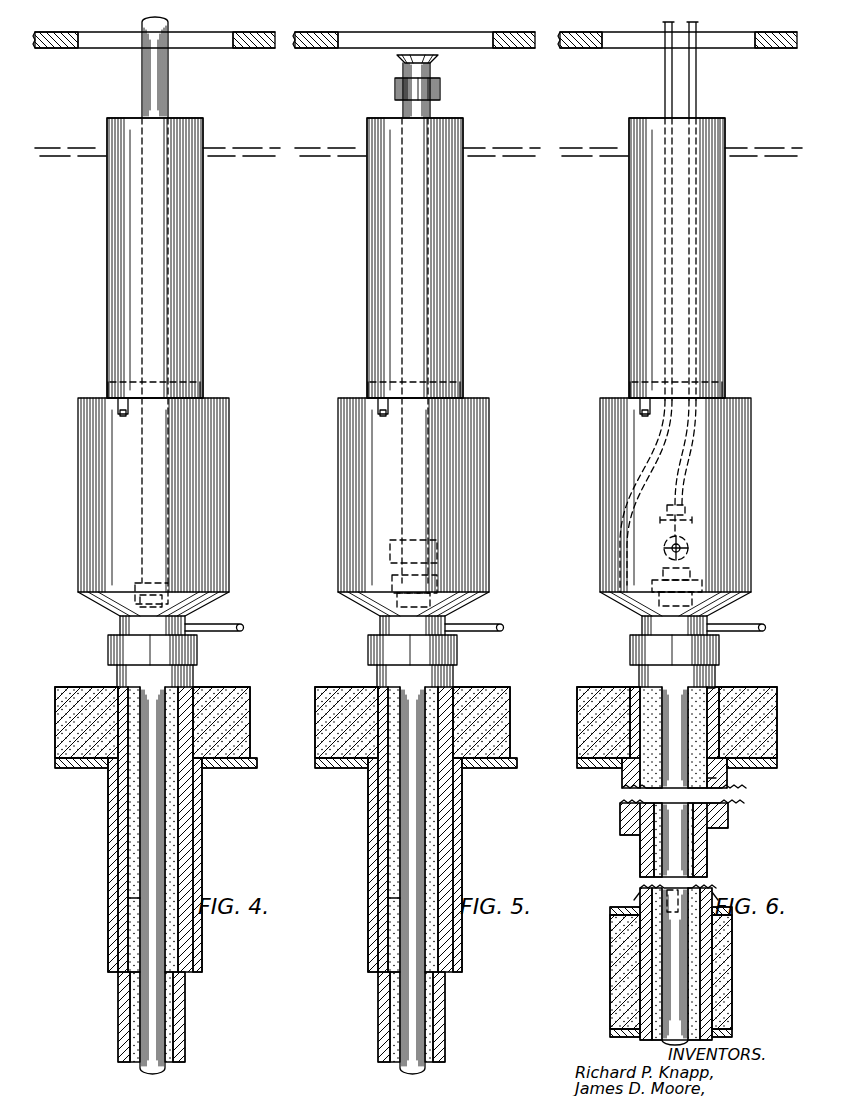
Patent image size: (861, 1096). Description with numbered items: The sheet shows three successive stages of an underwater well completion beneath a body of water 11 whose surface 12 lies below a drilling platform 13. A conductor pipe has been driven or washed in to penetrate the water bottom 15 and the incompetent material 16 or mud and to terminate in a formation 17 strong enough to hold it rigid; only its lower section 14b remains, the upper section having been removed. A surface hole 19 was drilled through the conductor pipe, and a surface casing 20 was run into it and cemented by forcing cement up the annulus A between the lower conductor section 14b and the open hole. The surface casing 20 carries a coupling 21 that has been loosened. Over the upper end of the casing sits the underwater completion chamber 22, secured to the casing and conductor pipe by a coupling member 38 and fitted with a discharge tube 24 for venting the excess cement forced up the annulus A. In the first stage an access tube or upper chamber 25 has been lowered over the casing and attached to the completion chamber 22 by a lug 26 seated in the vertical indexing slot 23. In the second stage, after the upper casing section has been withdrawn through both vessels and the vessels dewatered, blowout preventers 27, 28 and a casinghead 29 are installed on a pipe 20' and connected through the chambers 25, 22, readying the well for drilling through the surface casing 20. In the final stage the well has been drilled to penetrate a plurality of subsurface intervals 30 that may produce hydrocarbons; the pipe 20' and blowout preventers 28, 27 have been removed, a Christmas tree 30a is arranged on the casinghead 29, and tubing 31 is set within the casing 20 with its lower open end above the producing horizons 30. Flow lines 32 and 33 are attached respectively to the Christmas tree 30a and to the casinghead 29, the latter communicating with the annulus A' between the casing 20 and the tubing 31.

In FIG. 4, the body of water 11 is at (74, 330).
In FIG. 5, the body of water 11 is at (391, 258).
In FIG. 6, the body of water 11 is at (651, 258).
In FIG. 4, the surface 12 is at (72, 148).
In FIG. 5, the surface 12 is at (417, 140).
In FIG. 6, the surface 12 is at (681, 140).
In FIG. 4, the drilling platform 13 is at (62, 33).
In FIG. 5, the drilling platform 13 is at (414, 29).
In FIG. 6, the drilling platform 13 is at (677, 29).
In FIG. 4, the lower section of conductor pipe 14b is at (118, 820).
In FIG. 5, the lower section of conductor pipe 14b is at (394, 829).
In FIG. 6, the lower section of conductor pipe 14b is at (668, 737).
In FIG. 4, the water bottom 15 is at (83, 690).
In FIG. 5, the water bottom 15 is at (412, 679).
In FIG. 6, the water bottom 15 is at (677, 679).
In FIG. 4, the incompetent material 16 is at (70, 722).
In FIG. 5, the incompetent material 16 is at (403, 727).
In FIG. 6, the incompetent material 16 is at (663, 727).
In FIG. 4, the formation 17 is at (90, 957).
In FIG. 5, the formation 17 is at (396, 865).
In FIG. 6, the formation 17 is at (656, 855).
In FIG. 4, the surface hole 19 is at (130, 1031).
In FIG. 5, the surface hole 19 is at (391, 1017).
In FIG. 6, the surface hole 19 is at (661, 962).
In FIG. 4, the surface casing 20 is at (111, 545).
In FIG. 5, the surface casing 20 is at (379, 880).
In FIG. 6, the surface casing 20 is at (646, 866).
In FIG. 5, the pipe 20' is at (374, 350).
In FIG. 4, the coupling 21 is at (135, 607).
In FIG. 4, the underwater completion chamber 22 is at (78, 500).
In FIG. 5, the underwater completion chamber 22 is at (397, 516).
In FIG. 6, the underwater completion chamber 22 is at (657, 516).
In FIG. 4, the indexing slot 23 is at (115, 402).
In FIG. 5, the indexing slot 23 is at (395, 394).
In FIG. 6, the indexing slot 23 is at (656, 394).
In FIG. 4, the discharge tube 24 is at (222, 625).
In FIG. 5, the discharge tube 24 is at (479, 614).
In FIG. 6, the discharge tube 24 is at (741, 614).
In FIG. 4, the access tube 25 is at (107, 234).
In FIG. 5, the access tube 25 is at (392, 258).
In FIG. 6, the access tube 25 is at (652, 258).
In FIG. 4, the lug 26 is at (120, 414).
In FIG. 5, the lug 26 is at (345, 417).
In FIG. 6, the lug 26 is at (607, 417).
In FIG. 5, the blowout preventer 27 is at (371, 550).
In FIG. 5, the blowout preventer 28 is at (395, 86).
In FIG. 5, the casinghead 29 is at (371, 591).
In FIG. 6, the casinghead 29 is at (632, 591).
In FIG. 6, the subsurface interval 30 is at (658, 972).
In FIG. 6, the Christmas tree 30a is at (733, 568).
In FIG. 6, the tubing 31 is at (686, 838).
In FIG. 6, the flow line 32 is at (706, 307).
In FIG. 6, the flow line 33 is at (627, 532).
In FIG. 4, the coupling member 38 is at (108, 648).
In FIG. 5, the coupling member 38 is at (391, 661).
In FIG. 6, the coupling member 38 is at (653, 661).
In FIG. 4, the annulus A is at (103, 901).
In FIG. 5, the annulus A is at (363, 901).
In FIG. 6, the annulus A is at (729, 777).
In FIG. 6, the annulus A' is at (735, 677).